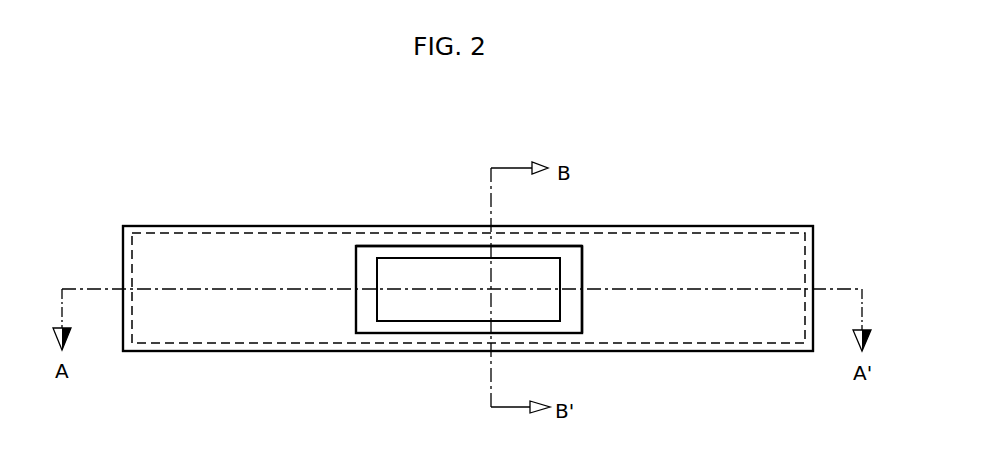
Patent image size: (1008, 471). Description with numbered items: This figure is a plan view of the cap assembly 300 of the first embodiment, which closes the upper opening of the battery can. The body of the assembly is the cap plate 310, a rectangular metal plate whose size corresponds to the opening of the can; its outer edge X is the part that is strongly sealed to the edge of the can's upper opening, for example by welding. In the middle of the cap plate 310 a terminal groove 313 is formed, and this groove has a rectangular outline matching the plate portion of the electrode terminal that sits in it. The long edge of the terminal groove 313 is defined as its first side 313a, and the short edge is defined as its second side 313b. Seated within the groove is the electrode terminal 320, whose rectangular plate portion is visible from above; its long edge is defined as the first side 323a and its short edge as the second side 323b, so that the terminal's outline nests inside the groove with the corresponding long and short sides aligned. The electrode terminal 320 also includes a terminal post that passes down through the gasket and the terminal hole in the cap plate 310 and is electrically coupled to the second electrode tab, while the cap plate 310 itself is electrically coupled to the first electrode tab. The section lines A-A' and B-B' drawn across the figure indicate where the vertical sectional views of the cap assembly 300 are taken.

The cap assembly 300 is at (210, 190).
The cap plate 310 is at (707, 252).
The edge of the cap plate X is at (772, 232).
The terminal groove 313 is at (353, 258).
The first side 313a is at (393, 245).
The second side 313b is at (583, 275).
The electrode terminal 320 is at (429, 309).
The first side 323a is at (450, 258).
The second side 323b is at (562, 308).